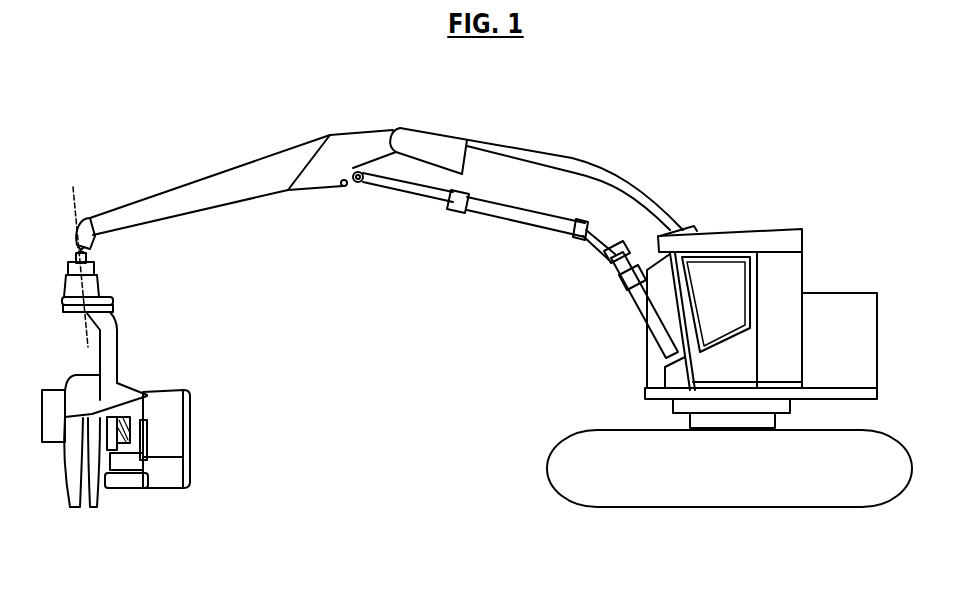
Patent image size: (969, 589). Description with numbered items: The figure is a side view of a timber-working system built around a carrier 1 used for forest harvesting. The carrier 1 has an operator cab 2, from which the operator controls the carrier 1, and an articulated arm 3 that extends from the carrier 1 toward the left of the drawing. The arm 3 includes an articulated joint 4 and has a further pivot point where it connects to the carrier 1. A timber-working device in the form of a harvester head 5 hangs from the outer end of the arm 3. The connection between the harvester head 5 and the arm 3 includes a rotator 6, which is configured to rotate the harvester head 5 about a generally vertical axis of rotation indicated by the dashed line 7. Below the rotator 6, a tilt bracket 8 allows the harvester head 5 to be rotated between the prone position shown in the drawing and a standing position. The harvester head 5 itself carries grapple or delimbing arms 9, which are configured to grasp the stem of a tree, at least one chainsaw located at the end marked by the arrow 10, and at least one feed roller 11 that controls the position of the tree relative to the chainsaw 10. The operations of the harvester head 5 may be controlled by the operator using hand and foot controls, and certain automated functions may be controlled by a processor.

The carrier 1 is at (172, 126).
The operator cab 2 is at (780, 231).
The articulated arm 3 is at (553, 153).
The articulated joint 4 is at (412, 128).
The harvester head 5 is at (228, 373).
The rotator 6 is at (95, 277).
The axis of rotation 7 is at (77, 255).
The tilt bracket 8 is at (118, 350).
The grapple or delimbing arms 9 is at (68, 510).
The chainsaw 10 is at (200, 455).
The feed roller 11 is at (125, 493).